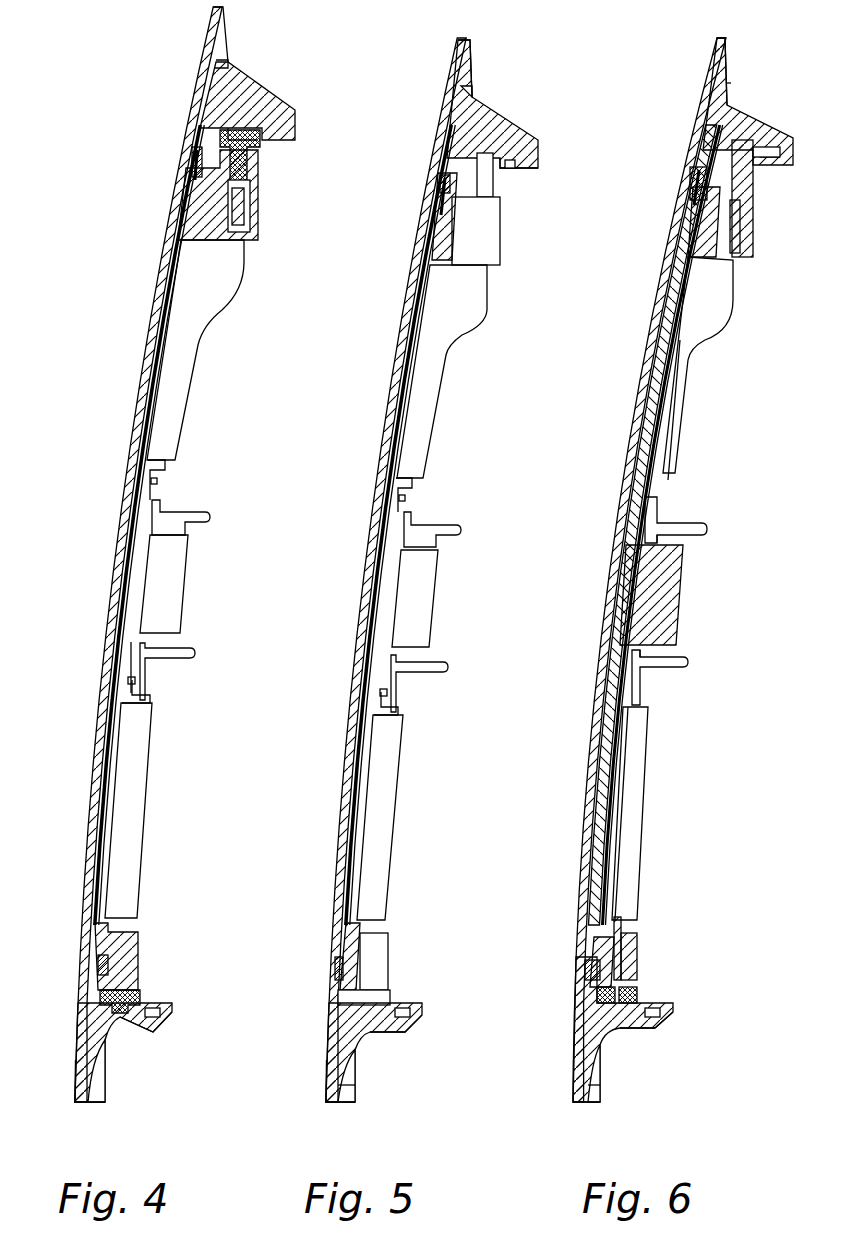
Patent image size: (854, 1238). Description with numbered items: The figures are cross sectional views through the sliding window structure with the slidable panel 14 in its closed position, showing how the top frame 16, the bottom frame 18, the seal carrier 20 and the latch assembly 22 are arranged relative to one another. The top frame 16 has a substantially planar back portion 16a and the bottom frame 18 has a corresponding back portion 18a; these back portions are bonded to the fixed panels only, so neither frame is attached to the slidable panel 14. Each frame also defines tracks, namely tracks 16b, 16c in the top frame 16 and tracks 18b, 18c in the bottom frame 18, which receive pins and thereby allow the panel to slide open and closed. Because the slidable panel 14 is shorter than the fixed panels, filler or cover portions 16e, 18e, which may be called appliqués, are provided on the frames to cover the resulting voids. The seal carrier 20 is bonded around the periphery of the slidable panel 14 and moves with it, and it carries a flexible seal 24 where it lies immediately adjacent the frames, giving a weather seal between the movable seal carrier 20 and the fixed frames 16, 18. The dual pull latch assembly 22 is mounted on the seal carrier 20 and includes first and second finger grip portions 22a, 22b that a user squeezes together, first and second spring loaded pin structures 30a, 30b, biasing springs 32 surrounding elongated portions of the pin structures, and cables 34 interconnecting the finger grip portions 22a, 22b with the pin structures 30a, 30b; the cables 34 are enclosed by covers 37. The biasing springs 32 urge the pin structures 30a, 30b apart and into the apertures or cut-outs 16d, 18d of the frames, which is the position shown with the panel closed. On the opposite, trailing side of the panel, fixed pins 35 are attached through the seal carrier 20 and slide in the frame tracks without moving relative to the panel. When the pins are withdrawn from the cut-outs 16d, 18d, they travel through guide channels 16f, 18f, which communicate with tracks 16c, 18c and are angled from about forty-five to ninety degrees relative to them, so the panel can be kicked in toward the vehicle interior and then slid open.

In FIG. 4, the slidable panel 14 is at (120, 568).
In FIG. 5, the slidable panel 14 is at (400, 385).
In FIG. 6, the slidable panel 14 is at (648, 385).
In FIG. 4, the top frame 16 is at (230, 92).
In FIG. 5, the top frame 16 is at (445, 115).
In FIG. 6, the top frame 16 is at (700, 140).
In FIG. 4, the back portion 16a is at (206, 45).
In FIG. 5, the back portion 16a is at (448, 68).
In FIG. 6, the back portion 16a is at (712, 55).
In FIG. 4, the first track 16b is at (240, 130).
In FIG. 5, the first track 16b is at (512, 158).
In FIG. 6, the second track 16c is at (762, 130).
In FIG. 6, the aperture or cut-out 16d is at (735, 132).
In FIG. 4, the filler or cover portion 16e is at (222, 25).
In FIG. 6, the guide channel 16f is at (762, 140).
In FIG. 4, the bottom frame 18 is at (90, 1035).
In FIG. 5, the bottom frame 18 is at (340, 1025).
In FIG. 6, the bottom frame 18 is at (578, 1050).
In FIG. 4, the back portion 18a is at (80, 1085).
In FIG. 5, the back portion 18a is at (330, 1080).
In FIG. 6, the back portion 18a is at (575, 1090).
In FIG. 4, the first track 18b is at (125, 1020).
In FIG. 5, the first track 18b is at (372, 1024).
In FIG. 6, the second track 18c is at (640, 1020).
In FIG. 6, the aperture or cut-out 18d is at (625, 1030).
In FIG. 5, the filler or cover portion 18e is at (356, 1090).
In FIG. 6, the filler or cover portion 18e is at (592, 1100).
In FIG. 6, the guide channel 18f is at (637, 995).
In FIG. 4, the seal carrier 20 is at (200, 202).
In FIG. 5, the seal carrier 20 is at (450, 220).
In FIG. 6, the seal carrier 20 is at (705, 220).
In FIG. 4, the latch assembly 22 is at (210, 591).
In FIG. 5, the latch assembly 22 is at (478, 524).
In FIG. 6, the latch assembly 22 is at (725, 521).
In FIG. 4, the first finger grip portion 22a is at (190, 510).
In FIG. 5, the first finger grip portion 22a is at (430, 525).
In FIG. 6, the first finger grip portion 22a is at (675, 525).
In FIG. 4, the second finger grip portion 22b is at (192, 662).
In FIG. 5, the second finger grip portion 22b is at (440, 670).
In FIG. 6, the second finger grip portion 22b is at (672, 668).
In FIG. 4, the seal 24 is at (190, 165).
In FIG. 5, the seal 24 is at (440, 185).
In FIG. 6, the seal 24 is at (695, 175).
In FIG. 5, the first spring loaded pin structure 30a is at (493, 180).
In FIG. 6, the first spring loaded pin structure 30a is at (753, 177).
In FIG. 6, the second spring loaded pin structure 30b is at (634, 968).
In FIG. 6, the biasing spring 32 is at (745, 228).
In FIG. 4, the cable 34 is at (160, 468).
In FIG. 5, the cable 34 is at (410, 478).
In FIG. 6, the cable 34 is at (678, 403).
In FIG. 4, the fixed pin 35 is at (250, 157).
In FIG. 4, the cover 37 is at (200, 390).
In FIG. 5, the cover 37 is at (468, 366).
In FIG. 6, the cover 37 is at (695, 366).